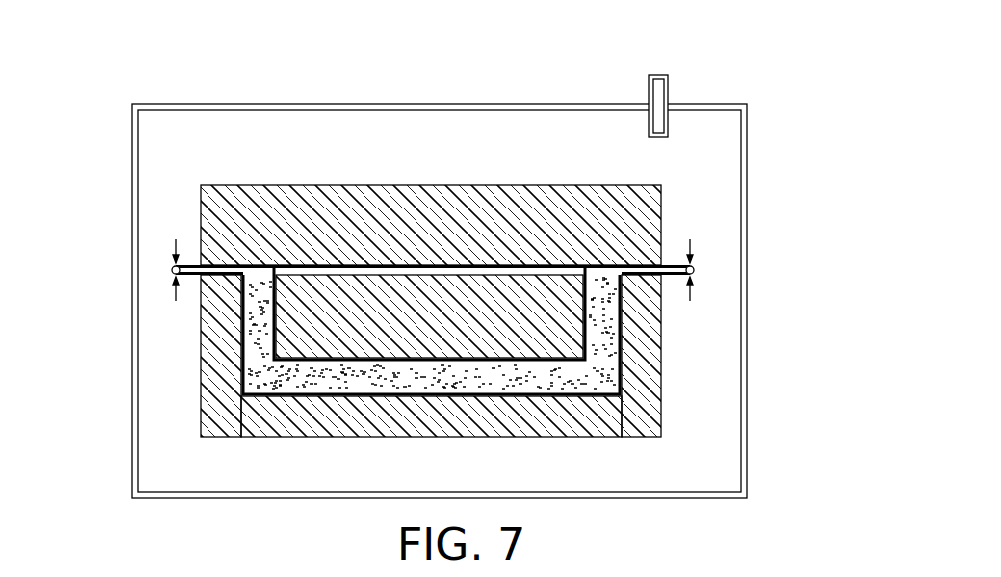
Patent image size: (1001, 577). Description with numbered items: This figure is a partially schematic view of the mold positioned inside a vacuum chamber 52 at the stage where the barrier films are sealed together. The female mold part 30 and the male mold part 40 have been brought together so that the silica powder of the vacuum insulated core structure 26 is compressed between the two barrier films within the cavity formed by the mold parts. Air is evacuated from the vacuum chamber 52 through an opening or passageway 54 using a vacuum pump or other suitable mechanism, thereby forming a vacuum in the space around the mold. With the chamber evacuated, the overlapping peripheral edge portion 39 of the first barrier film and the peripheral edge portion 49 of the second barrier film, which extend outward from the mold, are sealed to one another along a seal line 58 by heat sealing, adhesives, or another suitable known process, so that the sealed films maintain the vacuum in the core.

The vacuum chamber 52 is at (748, 273).
The opening or passageway 54 is at (668, 90).
The male mold part 40 is at (663, 208).
The female mold part 30 is at (663, 375).
The peripheral edge portion of first barrier film 39 is at (668, 264).
The peripheral edge portion of second barrier film 49 is at (668, 277).
The seal line 58 is at (172, 268).
The vacuum insulated core structure 26 is at (305, 381).